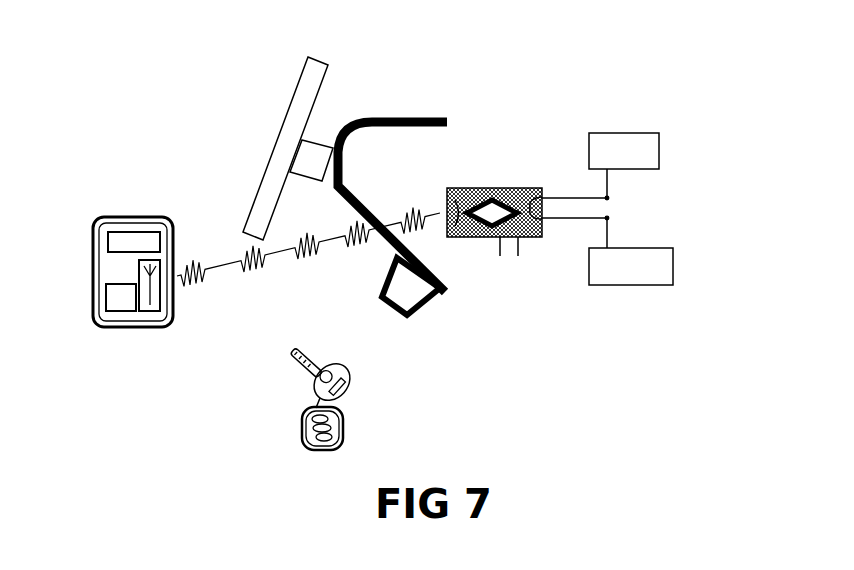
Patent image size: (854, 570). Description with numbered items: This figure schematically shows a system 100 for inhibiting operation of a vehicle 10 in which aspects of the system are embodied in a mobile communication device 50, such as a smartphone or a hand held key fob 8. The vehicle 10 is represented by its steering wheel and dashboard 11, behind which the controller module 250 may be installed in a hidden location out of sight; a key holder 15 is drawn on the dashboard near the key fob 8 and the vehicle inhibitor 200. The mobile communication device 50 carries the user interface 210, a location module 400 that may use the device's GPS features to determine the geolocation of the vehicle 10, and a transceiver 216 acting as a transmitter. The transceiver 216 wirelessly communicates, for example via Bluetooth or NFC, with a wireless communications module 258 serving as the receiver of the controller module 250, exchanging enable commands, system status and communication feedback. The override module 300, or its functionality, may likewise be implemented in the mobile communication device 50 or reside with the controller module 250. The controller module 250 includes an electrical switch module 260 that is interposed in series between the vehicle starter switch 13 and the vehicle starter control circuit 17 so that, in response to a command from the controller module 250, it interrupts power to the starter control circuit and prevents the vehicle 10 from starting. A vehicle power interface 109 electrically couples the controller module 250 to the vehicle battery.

The hand held key fob 8 is at (298, 425).
The vehicle 10 is at (293, 97).
The dashboard 11 is at (393, 118).
The vehicle starter switch 13 is at (659, 148).
The key holder / ignition 15 is at (383, 296).
The vehicle starter control circuit 17 is at (673, 266).
The mobile communication device 50 is at (80, 242).
The system for inhibiting operation of a vehicle 100 is at (681, 72).
The vehicle power interface 109 is at (500, 245).
The vehicle inhibitor 200 is at (451, 305).
The user interface 210 is at (113, 255).
The transceiver 216 is at (155, 312).
The controller module 250 is at (511, 196).
The wireless communications module 258 is at (458, 225).
The electrical switch module 260 is at (540, 208).
The override module 300 is at (445, 197).
The location module 400 is at (118, 312).